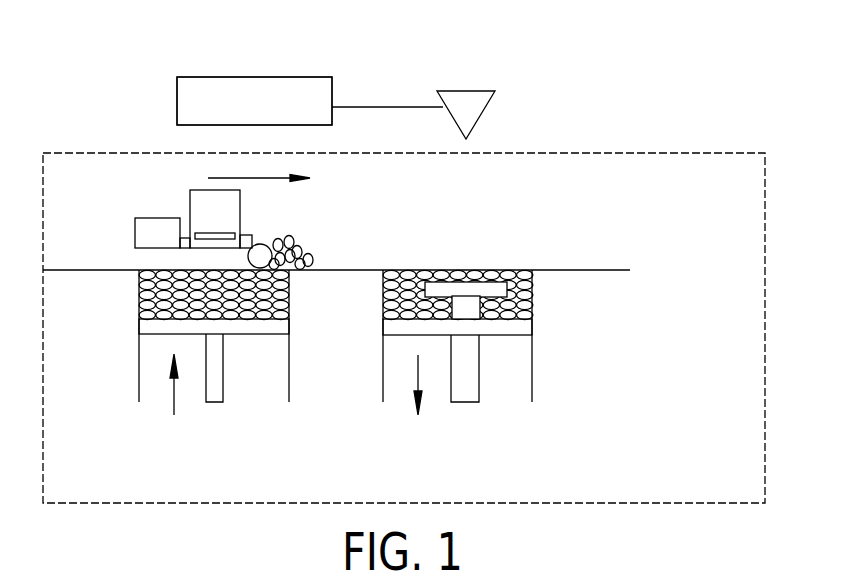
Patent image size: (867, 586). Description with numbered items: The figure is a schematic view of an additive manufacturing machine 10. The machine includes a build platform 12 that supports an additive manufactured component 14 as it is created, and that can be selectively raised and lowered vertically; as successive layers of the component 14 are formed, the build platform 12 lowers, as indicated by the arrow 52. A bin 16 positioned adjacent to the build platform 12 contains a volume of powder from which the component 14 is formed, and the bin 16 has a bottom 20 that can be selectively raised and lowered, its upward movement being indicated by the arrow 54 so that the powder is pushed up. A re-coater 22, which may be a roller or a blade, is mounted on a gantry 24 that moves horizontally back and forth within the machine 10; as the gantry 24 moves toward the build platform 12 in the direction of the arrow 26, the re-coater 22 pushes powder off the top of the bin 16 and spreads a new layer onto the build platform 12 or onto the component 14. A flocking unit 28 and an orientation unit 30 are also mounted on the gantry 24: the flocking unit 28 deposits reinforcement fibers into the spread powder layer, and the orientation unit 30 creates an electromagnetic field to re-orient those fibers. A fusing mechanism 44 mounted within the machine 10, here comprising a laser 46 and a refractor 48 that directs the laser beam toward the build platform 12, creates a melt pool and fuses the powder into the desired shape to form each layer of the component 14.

The additive manufacturing machine 10 is at (725, 89).
The build platform 12 is at (477, 337).
The additive manufactured component 14 is at (468, 288).
The bin 16 is at (184, 318).
The bottom 20 is at (237, 328).
The re-coater 22 is at (268, 242).
The gantry 24 is at (193, 215).
The arrow 26 is at (269, 180).
The flocking unit 28 is at (221, 219).
The orientation unit 30 is at (167, 247).
The fusing mechanism 44 is at (303, 77).
The laser 46 is at (267, 113).
The refractor 48 is at (478, 115).
The arrow 52 is at (412, 386).
The arrow 54 is at (175, 400).